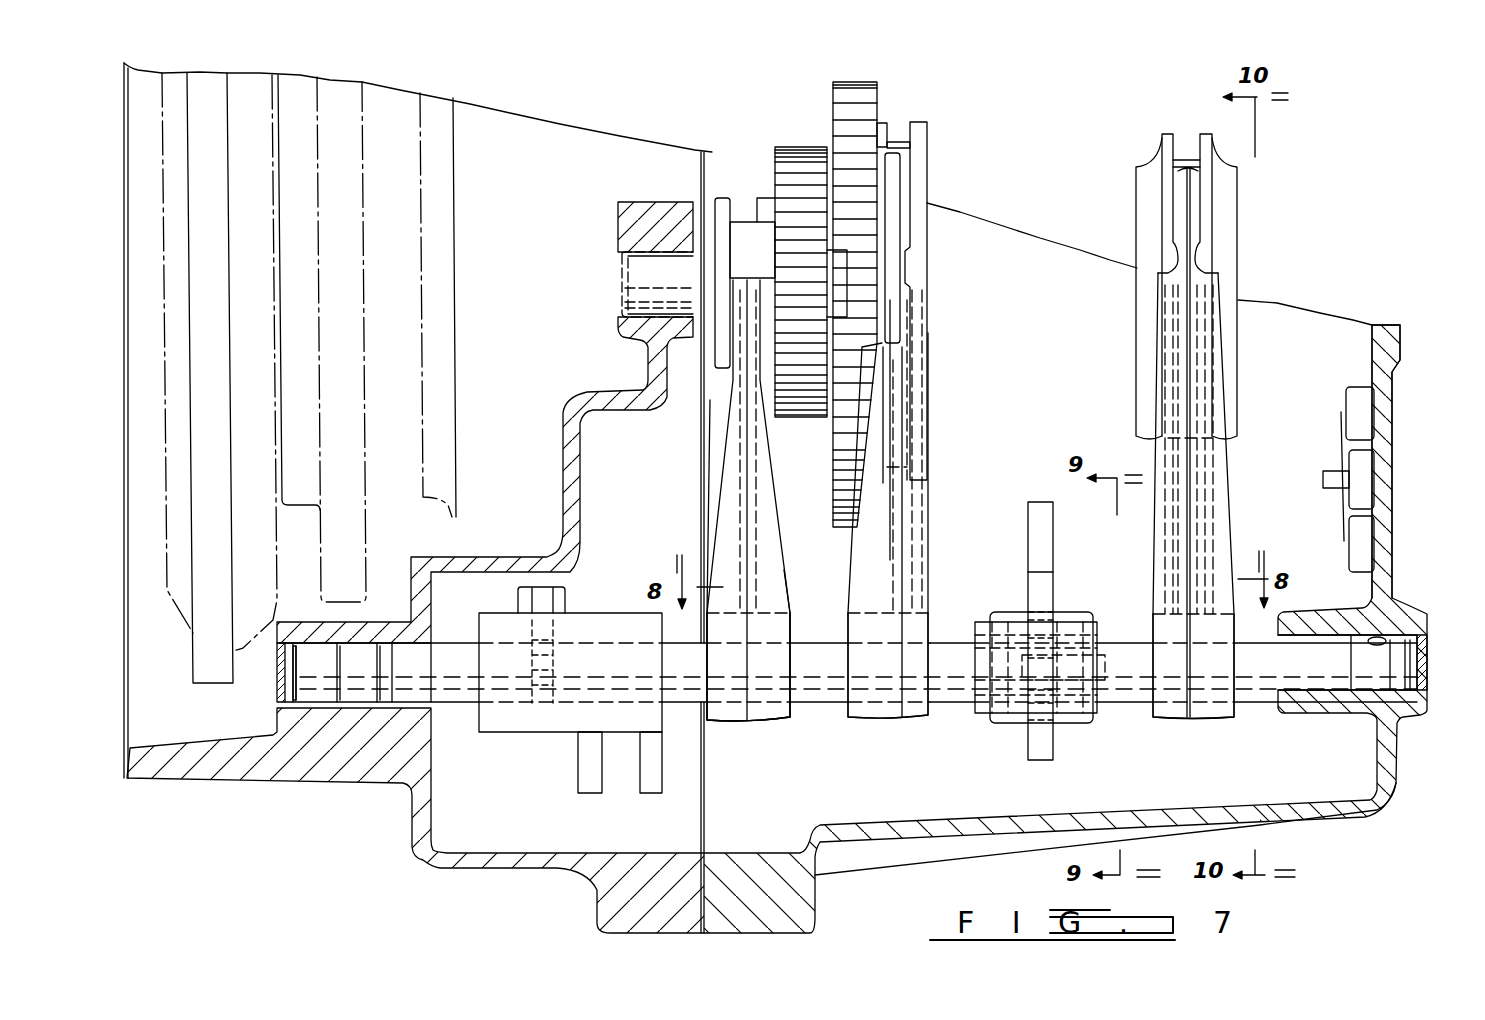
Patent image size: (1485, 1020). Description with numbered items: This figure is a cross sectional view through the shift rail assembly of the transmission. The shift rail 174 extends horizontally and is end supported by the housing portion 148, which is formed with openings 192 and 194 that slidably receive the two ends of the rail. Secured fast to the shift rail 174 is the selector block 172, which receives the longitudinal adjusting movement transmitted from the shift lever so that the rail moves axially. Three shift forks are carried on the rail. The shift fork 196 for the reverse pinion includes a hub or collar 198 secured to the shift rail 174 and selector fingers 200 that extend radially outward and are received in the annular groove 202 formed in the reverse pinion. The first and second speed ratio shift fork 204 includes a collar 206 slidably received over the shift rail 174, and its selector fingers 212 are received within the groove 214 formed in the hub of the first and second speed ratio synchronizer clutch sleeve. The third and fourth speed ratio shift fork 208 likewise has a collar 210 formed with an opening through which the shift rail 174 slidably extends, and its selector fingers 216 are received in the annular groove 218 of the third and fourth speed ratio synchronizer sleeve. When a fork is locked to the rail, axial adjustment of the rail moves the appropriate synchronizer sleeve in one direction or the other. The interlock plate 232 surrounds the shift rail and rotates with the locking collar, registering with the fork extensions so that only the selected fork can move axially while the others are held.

The housing portion 148 is at (1396, 569).
The selector block 172 is at (567, 723).
The shift rail 174 is at (465, 683).
The opening 192 is at (1426, 640).
The opening 194 is at (363, 703).
The shift fork for the reverse pinion 196 is at (773, 562).
The hub or collar 198 is at (760, 714).
The selector fingers 200 is at (770, 457).
The annular groove 202 is at (742, 203).
The first and second speed ratio shift fork 204 is at (928, 387).
The collar 206 is at (873, 714).
The third and fourth speed ratio shift fork 208 is at (1227, 408).
The collar 210 is at (1175, 718).
The selector fingers 212 is at (902, 198).
The groove 214 is at (910, 123).
The selector fingers 216 is at (1183, 210).
The annular groove 218 is at (1173, 137).
The interlock plate 232 is at (1057, 583).